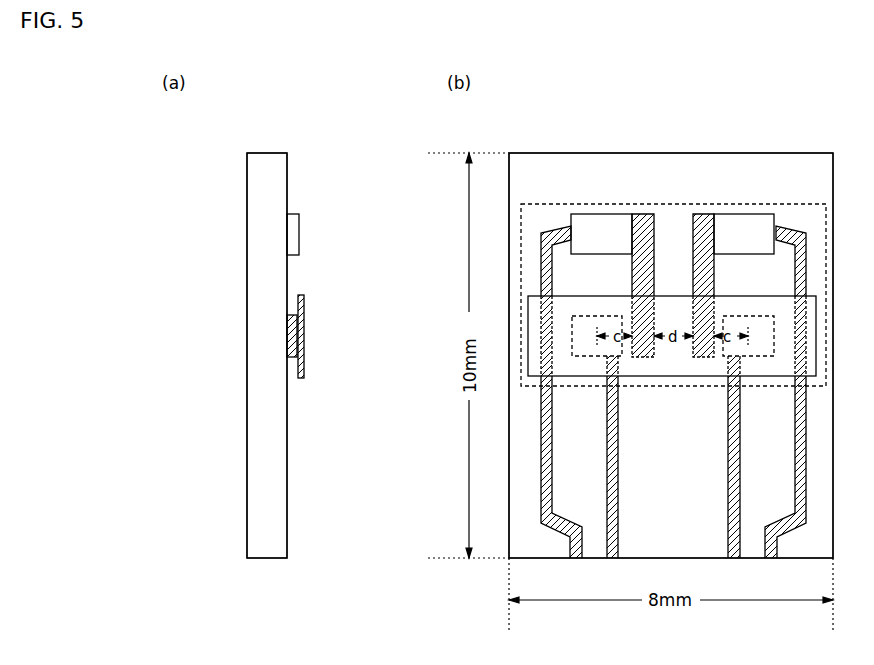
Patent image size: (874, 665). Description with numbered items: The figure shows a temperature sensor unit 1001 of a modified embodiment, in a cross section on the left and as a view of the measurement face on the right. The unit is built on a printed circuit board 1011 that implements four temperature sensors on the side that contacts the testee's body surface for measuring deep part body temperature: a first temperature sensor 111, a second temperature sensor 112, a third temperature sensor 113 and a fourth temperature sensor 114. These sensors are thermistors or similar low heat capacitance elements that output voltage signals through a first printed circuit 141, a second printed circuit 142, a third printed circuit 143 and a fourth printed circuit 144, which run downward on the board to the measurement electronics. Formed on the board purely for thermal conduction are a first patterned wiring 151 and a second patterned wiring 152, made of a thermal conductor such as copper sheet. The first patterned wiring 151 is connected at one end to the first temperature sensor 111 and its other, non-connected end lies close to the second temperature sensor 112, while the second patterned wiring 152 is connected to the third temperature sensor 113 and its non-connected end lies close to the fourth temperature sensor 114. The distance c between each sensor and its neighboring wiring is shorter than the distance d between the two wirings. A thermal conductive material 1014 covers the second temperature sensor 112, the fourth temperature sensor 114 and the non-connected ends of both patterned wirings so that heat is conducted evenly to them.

The temperature sensor unit 1001 is at (396, 92).
The printed circuit board 1011 is at (264, 153).
The first temperature sensor 111 is at (292, 231).
The second temperature sensor 112 is at (292, 338).
The third temperature sensor 113 is at (736, 214).
The fourth temperature sensor 114 is at (747, 357).
The thermal conductive material 1014 is at (303, 292).
The first patterned wiring 151 is at (650, 214).
The second patterned wiring 152 is at (708, 214).
The first printed circuit 141 is at (582, 527).
The second printed circuit 142 is at (620, 436).
The third printed circuit 143 is at (776, 530).
The fourth printed circuit 144 is at (729, 478).